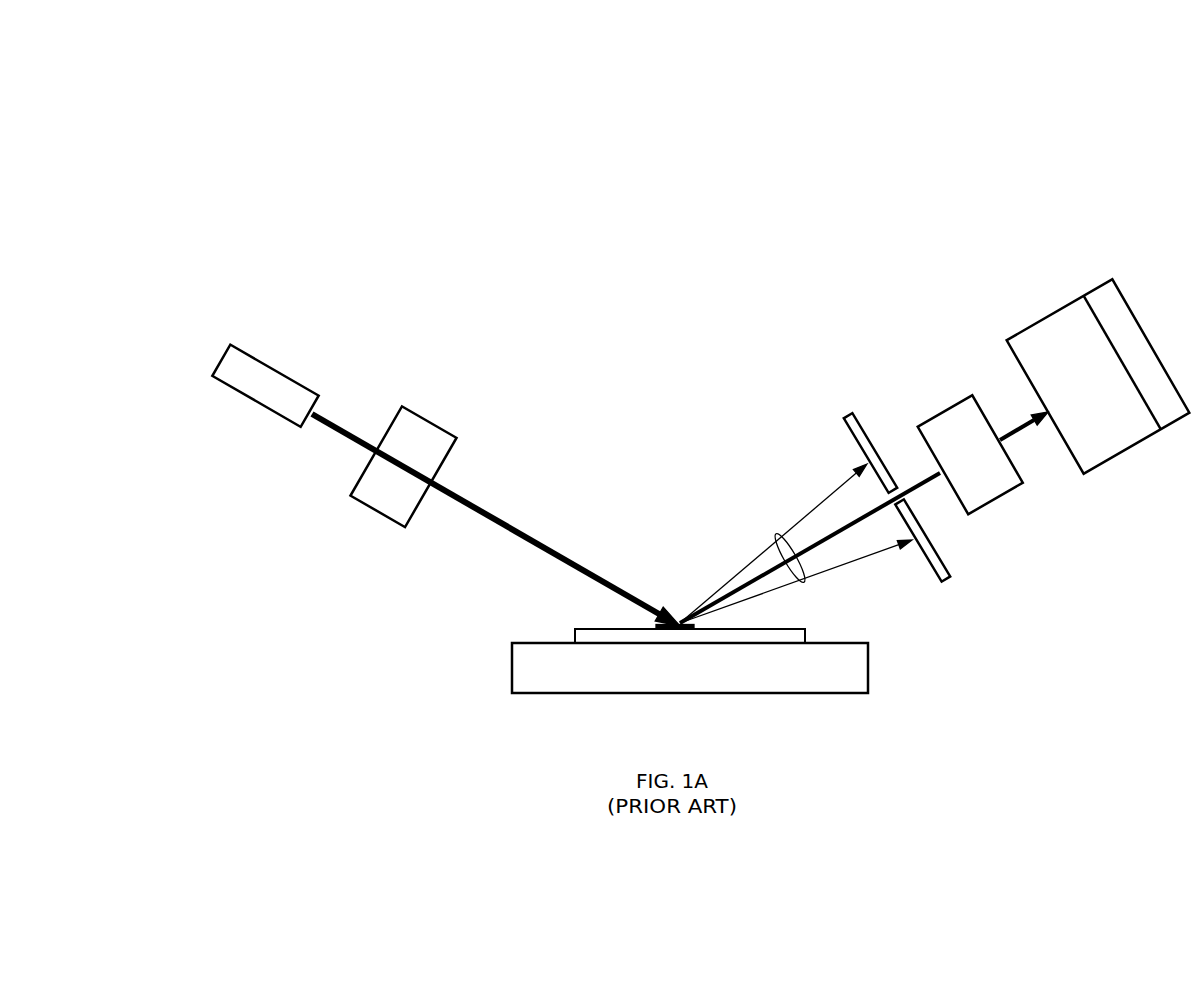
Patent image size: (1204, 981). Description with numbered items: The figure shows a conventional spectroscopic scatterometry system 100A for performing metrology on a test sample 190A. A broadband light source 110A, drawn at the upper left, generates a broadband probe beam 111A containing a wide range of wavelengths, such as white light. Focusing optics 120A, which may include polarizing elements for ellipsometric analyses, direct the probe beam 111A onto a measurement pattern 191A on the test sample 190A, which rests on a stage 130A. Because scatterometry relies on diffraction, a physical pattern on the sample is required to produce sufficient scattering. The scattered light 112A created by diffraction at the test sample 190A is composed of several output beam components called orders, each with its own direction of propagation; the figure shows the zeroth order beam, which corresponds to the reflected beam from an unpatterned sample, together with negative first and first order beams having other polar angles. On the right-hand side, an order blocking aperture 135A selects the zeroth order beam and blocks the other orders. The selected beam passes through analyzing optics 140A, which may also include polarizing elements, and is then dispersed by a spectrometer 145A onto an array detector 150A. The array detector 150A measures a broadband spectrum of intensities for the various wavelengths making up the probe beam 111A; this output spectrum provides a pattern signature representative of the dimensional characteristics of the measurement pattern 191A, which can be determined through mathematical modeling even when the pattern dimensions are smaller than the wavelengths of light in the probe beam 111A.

The spectroscopic scatterometry system 100A is at (269, 186).
The broadband light source 110A is at (263, 358).
The broadband probe beam 111A is at (523, 545).
The focusing optics 120A is at (427, 420).
The stage 130A is at (855, 686).
The test sample 190A is at (575, 628).
The measurement pattern 191A is at (677, 630).
The scattered light 112A is at (864, 563).
The order blocking aperture 135A is at (847, 417).
The analyzing optics 140A is at (955, 403).
The spectrometer 145A is at (1110, 283).
The array detector 150A is at (962, 317).